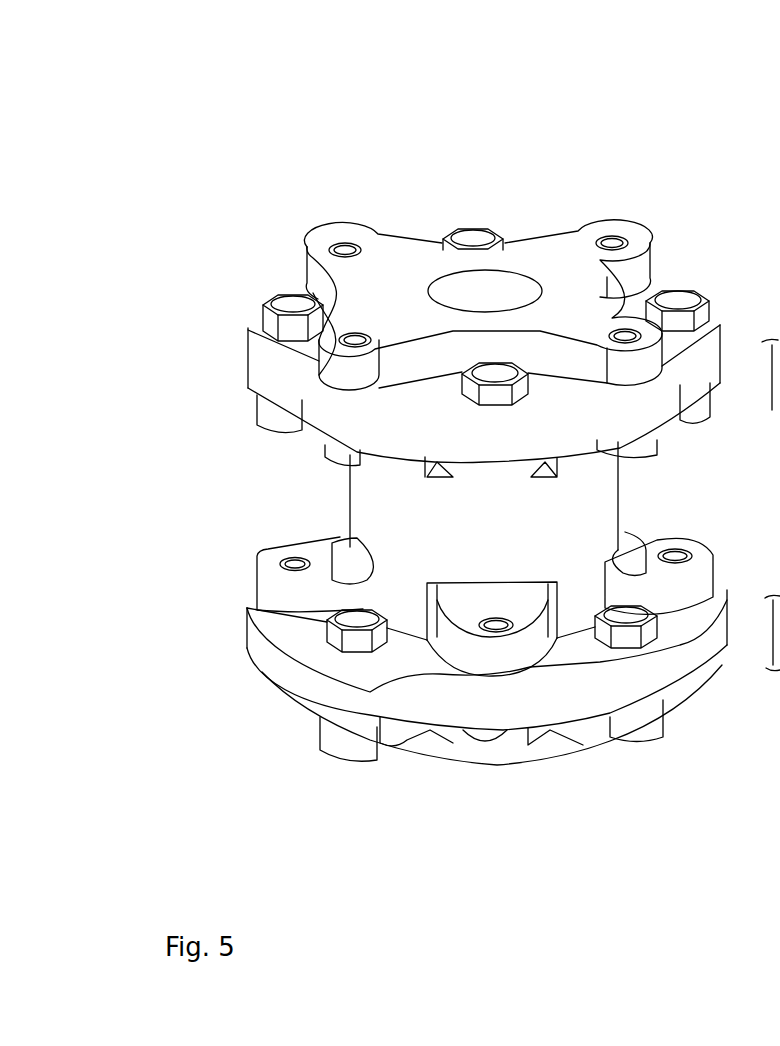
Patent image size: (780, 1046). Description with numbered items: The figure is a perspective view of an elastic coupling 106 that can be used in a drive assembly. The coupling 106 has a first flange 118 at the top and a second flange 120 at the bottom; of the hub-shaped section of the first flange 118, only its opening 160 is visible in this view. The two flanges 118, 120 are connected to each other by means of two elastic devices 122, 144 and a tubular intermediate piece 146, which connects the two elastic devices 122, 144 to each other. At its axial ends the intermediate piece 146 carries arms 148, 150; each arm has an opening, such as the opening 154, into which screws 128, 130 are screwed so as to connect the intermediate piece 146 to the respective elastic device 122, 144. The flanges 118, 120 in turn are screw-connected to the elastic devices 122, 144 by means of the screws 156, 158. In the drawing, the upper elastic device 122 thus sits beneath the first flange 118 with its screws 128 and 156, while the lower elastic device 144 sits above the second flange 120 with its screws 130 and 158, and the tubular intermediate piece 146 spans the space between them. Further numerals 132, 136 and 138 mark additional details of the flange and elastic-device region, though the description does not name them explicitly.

The elastic coupling 106 is at (478, 112).
The first flange 118 is at (424, 230).
The second flange 120 is at (470, 782).
The elastic device 122 is at (240, 311).
The screw 128 is at (292, 310).
The screw 130 is at (285, 560).
The bolt hole 132 is at (605, 243).
The plate lobe side face 136 is at (307, 250).
The lower flange body 138 is at (334, 733).
The elastic device 144 is at (196, 634).
The intermediate piece 146 is at (232, 511).
The arm 148 is at (502, 482).
The arm 150 is at (273, 587).
The opening 154 is at (300, 567).
The screw 156 is at (597, 231).
The screw 158 is at (326, 645).
The opening 160 is at (427, 288).